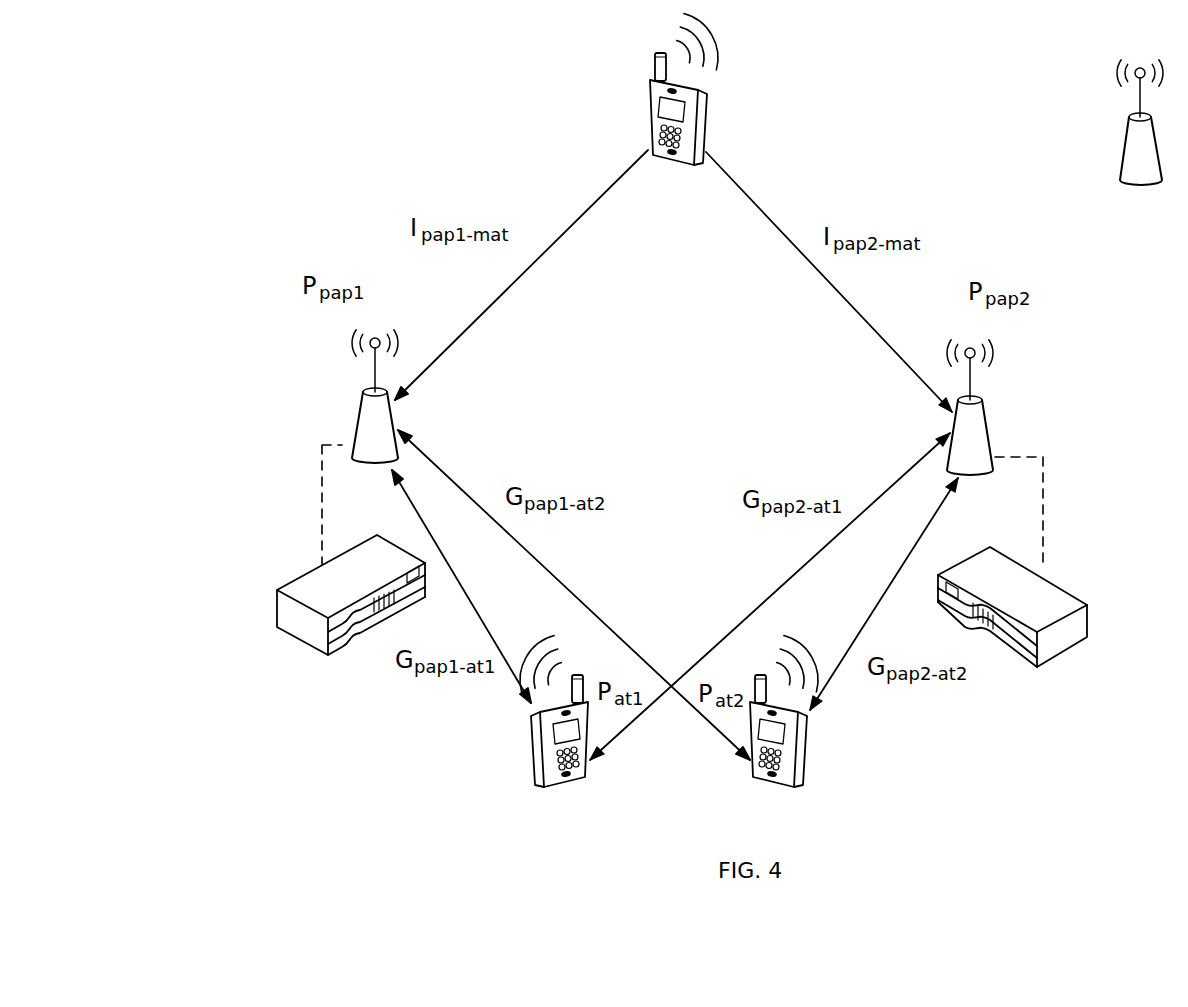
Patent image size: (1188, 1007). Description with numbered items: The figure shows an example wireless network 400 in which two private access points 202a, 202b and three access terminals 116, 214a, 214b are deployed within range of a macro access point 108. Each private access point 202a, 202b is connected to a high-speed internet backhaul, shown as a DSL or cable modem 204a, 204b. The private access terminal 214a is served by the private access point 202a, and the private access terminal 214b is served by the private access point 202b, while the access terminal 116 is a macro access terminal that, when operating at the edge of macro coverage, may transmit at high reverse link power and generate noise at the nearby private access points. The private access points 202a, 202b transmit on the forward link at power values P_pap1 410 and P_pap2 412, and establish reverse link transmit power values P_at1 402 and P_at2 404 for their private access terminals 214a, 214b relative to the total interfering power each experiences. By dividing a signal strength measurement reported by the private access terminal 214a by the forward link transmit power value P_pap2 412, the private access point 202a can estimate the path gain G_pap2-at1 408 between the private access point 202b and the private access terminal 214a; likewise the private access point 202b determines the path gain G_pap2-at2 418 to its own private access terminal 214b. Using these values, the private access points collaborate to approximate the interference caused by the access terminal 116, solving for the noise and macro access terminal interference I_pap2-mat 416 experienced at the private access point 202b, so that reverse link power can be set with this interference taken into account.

The wireless network 400 is at (198, 78).
The access terminal 116 is at (678, 170).
The macro access point 108 is at (1132, 183).
The private access point 202a is at (356, 432).
The private access point 202b is at (995, 442).
The DSL or cable modem 204a is at (300, 642).
The DSL or cable modem 204b is at (1068, 660).
The private access terminal 214a is at (555, 792).
The private access terminal 214b is at (795, 797).
The reverse link transmit power value P_at1 402 is at (582, 677).
The reverse link transmit power value P_at2 404 is at (760, 678).
The path gain G_pap2-at1 408 is at (816, 553).
The forward link transmit power value P_pap1 410 is at (378, 337).
The forward link transmit power value P_pap2 412 is at (970, 347).
The noise and macro access terminal interference I_pap2-mat 416 is at (838, 286).
The path gain G_pap2-at2 418 is at (842, 668).